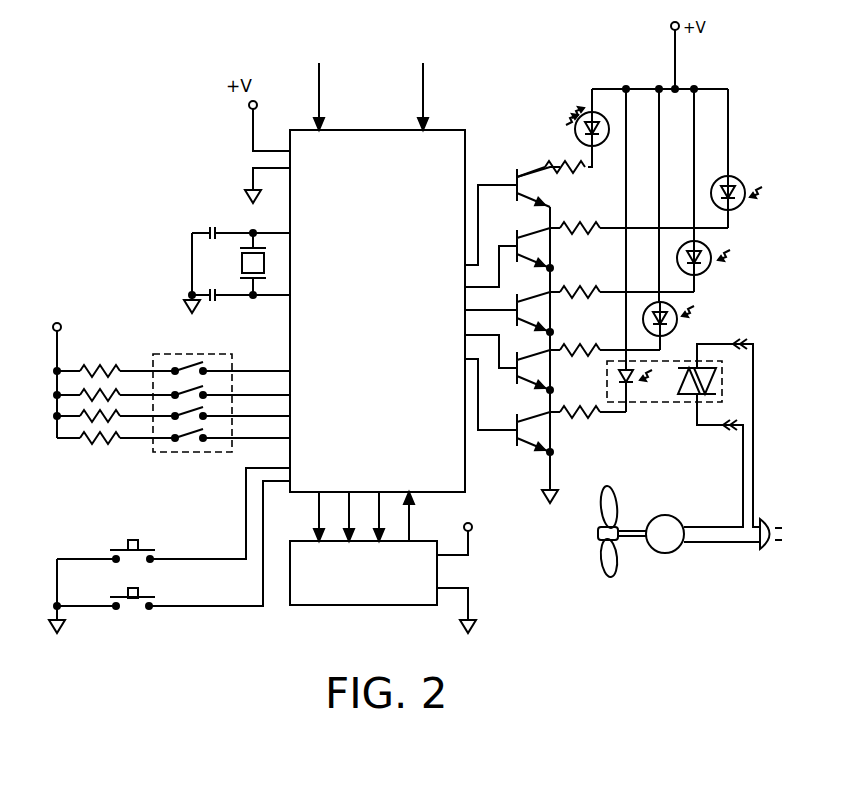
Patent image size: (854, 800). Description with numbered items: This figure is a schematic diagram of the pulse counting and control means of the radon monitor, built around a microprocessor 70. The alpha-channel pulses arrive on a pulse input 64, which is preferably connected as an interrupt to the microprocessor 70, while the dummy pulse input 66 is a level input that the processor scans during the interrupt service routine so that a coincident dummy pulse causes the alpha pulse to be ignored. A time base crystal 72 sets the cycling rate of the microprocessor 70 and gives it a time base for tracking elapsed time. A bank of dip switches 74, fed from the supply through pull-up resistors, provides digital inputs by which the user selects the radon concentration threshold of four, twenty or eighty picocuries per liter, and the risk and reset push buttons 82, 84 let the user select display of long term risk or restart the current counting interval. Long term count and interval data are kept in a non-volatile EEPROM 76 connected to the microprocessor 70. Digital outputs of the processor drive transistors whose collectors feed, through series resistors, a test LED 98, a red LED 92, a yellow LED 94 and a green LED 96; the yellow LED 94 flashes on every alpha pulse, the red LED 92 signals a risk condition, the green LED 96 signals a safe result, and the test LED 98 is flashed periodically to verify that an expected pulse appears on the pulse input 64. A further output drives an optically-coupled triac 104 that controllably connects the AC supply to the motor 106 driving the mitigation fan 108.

The pulse input 64 is at (320, 86).
The dummy pulse input 66 is at (425, 88).
The microprocessor 70 is at (400, 441).
The time base crystal 72 is at (242, 264).
The dip switch 74 is at (172, 352).
The EEPROM 76 is at (351, 603).
The risk push button 82 is at (132, 540).
The reset push button 84 is at (140, 593).
The red LED 92 is at (732, 179).
The yellow LED 94 is at (712, 248).
The green LED 96 is at (683, 310).
The test LED 98 is at (589, 114).
The optically-coupled triac 104 is at (684, 406).
The motor 106 is at (651, 516).
The fan 108 is at (606, 566).